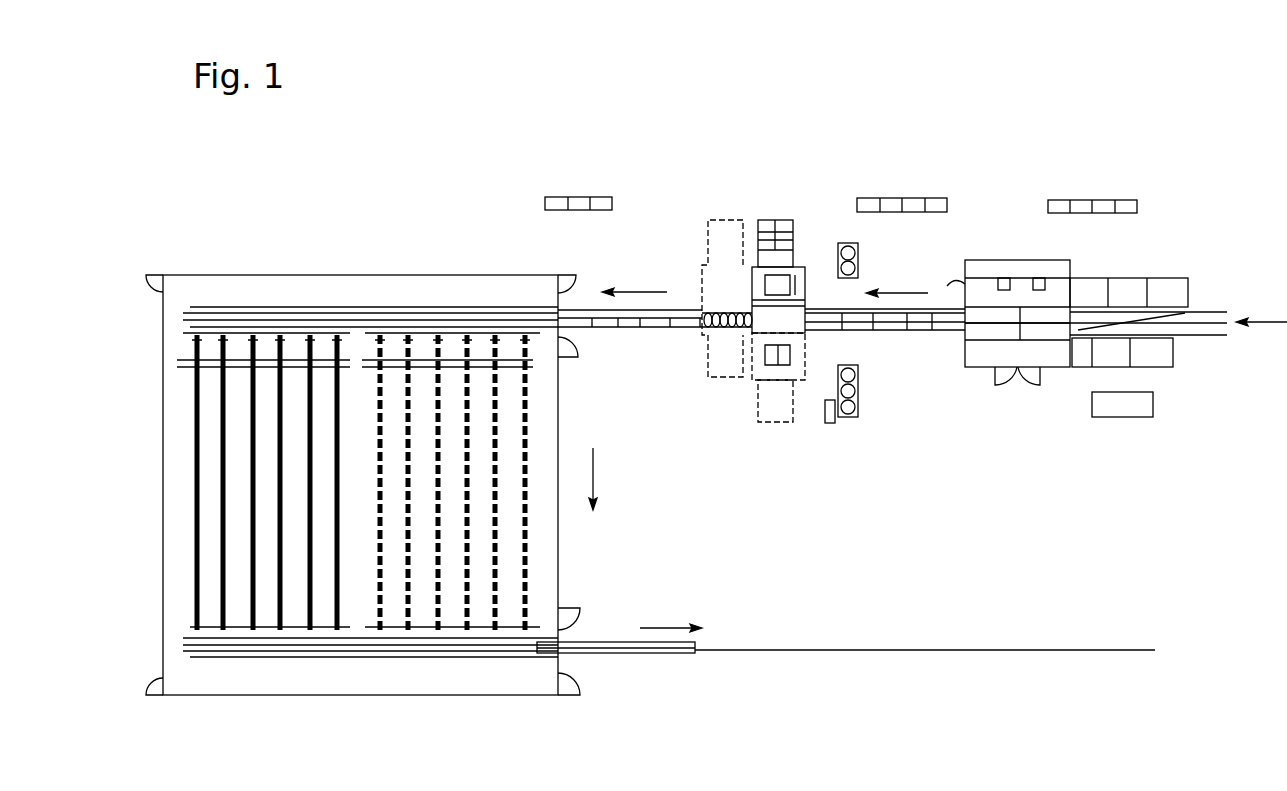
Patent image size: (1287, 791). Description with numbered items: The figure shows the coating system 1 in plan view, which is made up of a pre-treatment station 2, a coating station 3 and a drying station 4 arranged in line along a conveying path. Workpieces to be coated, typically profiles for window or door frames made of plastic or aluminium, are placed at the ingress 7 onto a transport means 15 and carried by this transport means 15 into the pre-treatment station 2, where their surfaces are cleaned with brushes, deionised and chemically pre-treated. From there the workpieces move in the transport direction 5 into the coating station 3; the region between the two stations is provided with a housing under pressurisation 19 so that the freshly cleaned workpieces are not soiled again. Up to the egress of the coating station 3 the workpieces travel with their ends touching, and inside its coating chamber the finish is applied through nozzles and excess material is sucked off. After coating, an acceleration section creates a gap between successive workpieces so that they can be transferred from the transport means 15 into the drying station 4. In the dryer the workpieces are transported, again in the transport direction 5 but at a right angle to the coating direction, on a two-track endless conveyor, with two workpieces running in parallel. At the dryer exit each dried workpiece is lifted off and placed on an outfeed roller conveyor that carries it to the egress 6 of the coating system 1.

The coating system 1 is at (885, 133).
The pre-treatment station 2 is at (1009, 233).
The coating station 3 is at (772, 206).
The drying station 4 is at (437, 246).
The transport direction of the workpiece 5 is at (647, 291).
The egress 6 is at (665, 673).
The ingress 7 is at (1277, 321).
The transport means 15 is at (918, 331).
The pressurisation 19 is at (642, 355).